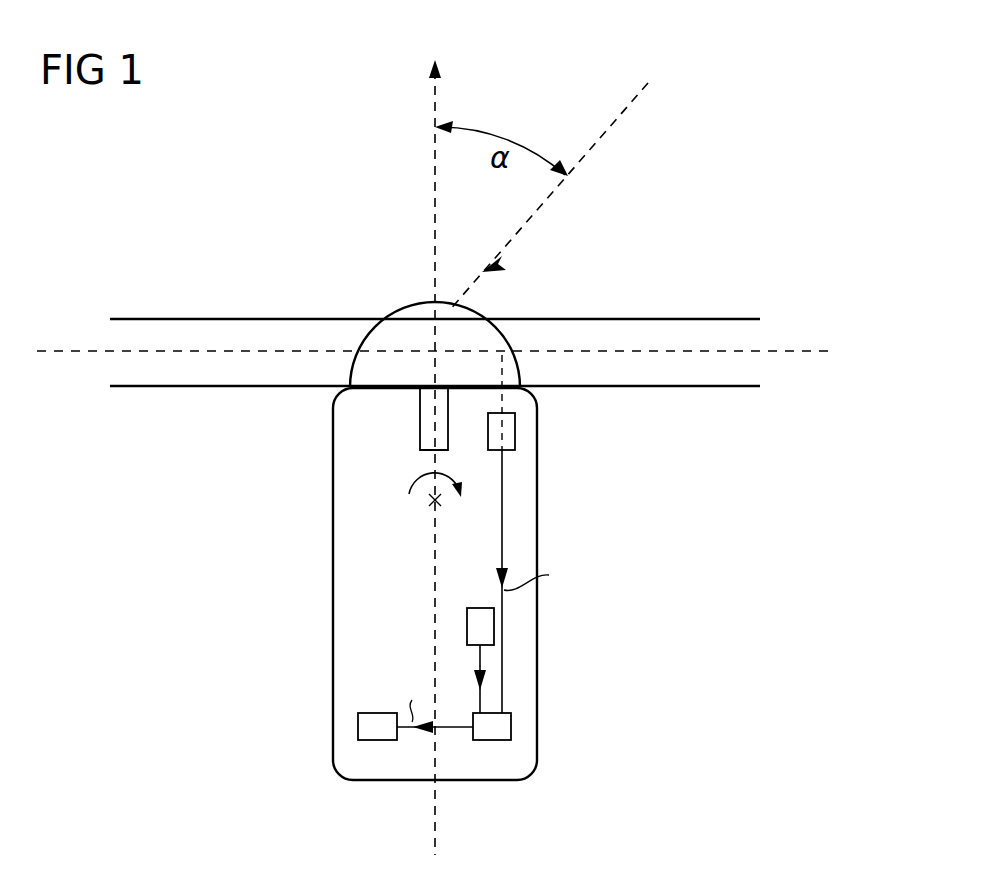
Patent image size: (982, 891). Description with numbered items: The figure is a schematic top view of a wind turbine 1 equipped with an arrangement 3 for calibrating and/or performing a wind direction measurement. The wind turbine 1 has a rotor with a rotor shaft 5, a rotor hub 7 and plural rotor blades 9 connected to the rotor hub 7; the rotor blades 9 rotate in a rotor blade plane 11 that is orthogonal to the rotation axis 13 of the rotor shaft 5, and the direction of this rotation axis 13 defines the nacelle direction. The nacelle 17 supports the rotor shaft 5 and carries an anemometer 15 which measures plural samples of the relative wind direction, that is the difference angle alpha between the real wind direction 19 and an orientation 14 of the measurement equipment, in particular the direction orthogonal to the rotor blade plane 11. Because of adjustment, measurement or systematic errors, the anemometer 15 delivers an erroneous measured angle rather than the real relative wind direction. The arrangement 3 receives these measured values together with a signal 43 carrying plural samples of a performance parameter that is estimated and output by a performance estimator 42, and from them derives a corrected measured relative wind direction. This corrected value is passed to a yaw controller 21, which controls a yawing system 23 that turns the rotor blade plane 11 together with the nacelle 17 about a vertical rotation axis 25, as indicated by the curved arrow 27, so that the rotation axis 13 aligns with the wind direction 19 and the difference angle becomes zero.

The wind turbine 1 is at (770, 148).
The arrangement for calibrating and/or performing a wind direction measurement 3 is at (434, 491).
The rotor shaft 5 is at (424, 419).
The rotor hub 7 is at (402, 320).
The rotor blades 9 is at (236, 326).
The rotor blade plane 11 is at (805, 350).
The rotation axis 13 is at (439, 457).
The orientation of a measurement equipment 14 is at (498, 373).
The anemometer 15 is at (516, 430).
The nacelle 17 is at (340, 584).
The real wind direction 19 is at (608, 130).
The yaw controller 21 is at (378, 712).
The yawing system 23 is at (395, 508).
The vertical rotation axis 25 is at (440, 503).
The curved arrow 27 is at (420, 490).
The performance estimator 42 is at (480, 606).
The signal of performance parameter 43 is at (483, 690).